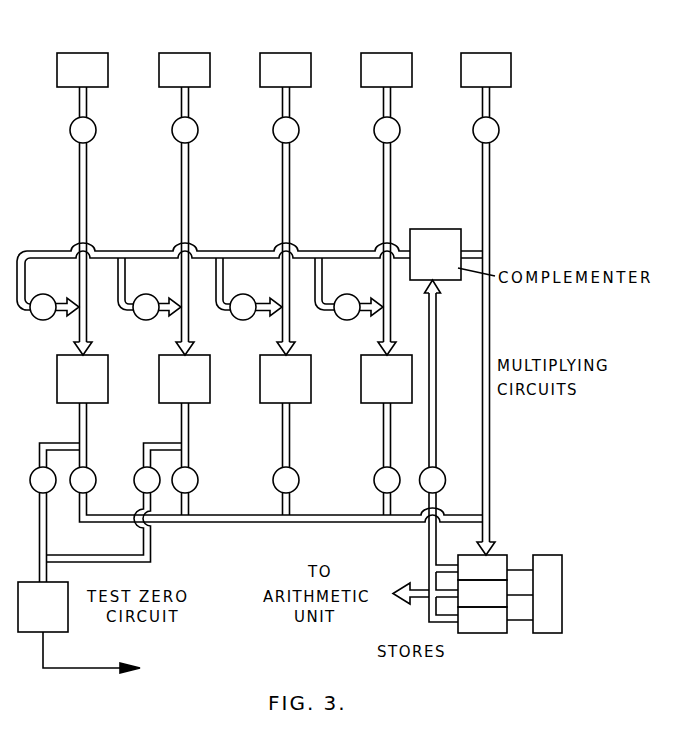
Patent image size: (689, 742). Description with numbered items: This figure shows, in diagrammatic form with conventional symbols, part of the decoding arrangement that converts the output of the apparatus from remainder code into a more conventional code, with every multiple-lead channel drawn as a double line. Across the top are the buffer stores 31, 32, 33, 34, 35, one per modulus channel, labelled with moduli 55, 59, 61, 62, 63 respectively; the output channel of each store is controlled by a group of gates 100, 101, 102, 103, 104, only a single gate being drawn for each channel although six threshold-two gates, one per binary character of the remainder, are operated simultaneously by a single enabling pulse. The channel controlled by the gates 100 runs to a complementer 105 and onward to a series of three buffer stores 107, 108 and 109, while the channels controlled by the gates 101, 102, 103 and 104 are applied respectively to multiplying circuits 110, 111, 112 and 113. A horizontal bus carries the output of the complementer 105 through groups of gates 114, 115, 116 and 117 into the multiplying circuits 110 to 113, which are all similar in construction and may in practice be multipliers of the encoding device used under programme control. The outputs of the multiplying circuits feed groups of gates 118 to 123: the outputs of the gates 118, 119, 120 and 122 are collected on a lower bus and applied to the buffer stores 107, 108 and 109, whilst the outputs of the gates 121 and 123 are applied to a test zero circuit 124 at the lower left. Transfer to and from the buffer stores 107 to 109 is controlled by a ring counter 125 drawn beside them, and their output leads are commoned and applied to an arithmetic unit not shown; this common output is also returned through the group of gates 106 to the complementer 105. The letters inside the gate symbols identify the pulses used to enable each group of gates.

The buffer store 31 is at (486, 70).
The buffer store 32 is at (386, 70).
The buffer store 33 is at (285, 70).
The buffer store 34 is at (184, 70).
The buffer store 35 is at (82, 70).
The modulus 55 is at (486, 23).
The modulus 59 is at (387, 23).
The modulus 61 is at (286, 23).
The modulus 62 is at (185, 23).
The modulus 63 is at (83, 23).
The group of gates 100 is at (497, 137).
The group of gates 101 is at (398, 137).
The group of gates 102 is at (297, 137).
The group of gates 103 is at (196, 137).
The group of gates 104 is at (94, 137).
The complementer 105 is at (435, 254).
The group of gates 106 is at (447, 386).
The buffer store 107 is at (482, 567).
The buffer store 108 is at (482, 593).
The buffer store 109 is at (482, 620).
The multiplying circuit 110 is at (386, 379).
The multiplying circuit 111 is at (285, 379).
The multiplying circuit 112 is at (184, 379).
The multiplying circuit 113 is at (82, 379).
The group of gates 114 is at (349, 299).
The group of gates 115 is at (249, 299).
The group of gates 116 is at (149, 299).
The group of gates 117 is at (48, 296).
The group of gates 118 is at (375, 472).
The group of gates 119 is at (275, 472).
The group of gates 120 is at (196, 472).
The group of gates 121 is at (96, 485).
The group of gates 122 is at (136, 472).
The group of gates 123 is at (31, 472).
The test zero circuit 124 is at (79, 627).
The ring counter 125 is at (543, 620).